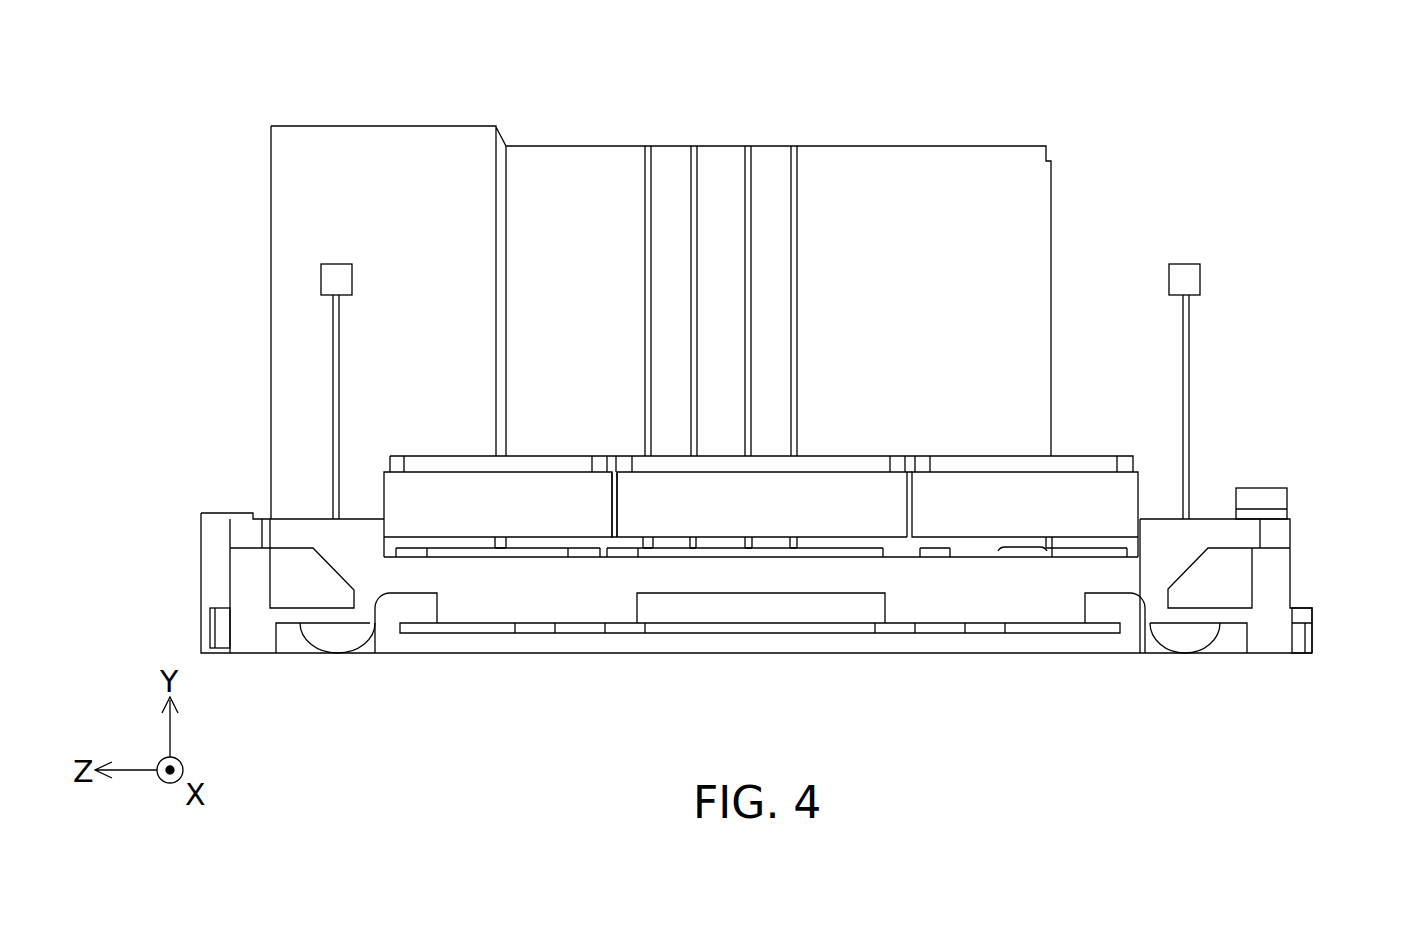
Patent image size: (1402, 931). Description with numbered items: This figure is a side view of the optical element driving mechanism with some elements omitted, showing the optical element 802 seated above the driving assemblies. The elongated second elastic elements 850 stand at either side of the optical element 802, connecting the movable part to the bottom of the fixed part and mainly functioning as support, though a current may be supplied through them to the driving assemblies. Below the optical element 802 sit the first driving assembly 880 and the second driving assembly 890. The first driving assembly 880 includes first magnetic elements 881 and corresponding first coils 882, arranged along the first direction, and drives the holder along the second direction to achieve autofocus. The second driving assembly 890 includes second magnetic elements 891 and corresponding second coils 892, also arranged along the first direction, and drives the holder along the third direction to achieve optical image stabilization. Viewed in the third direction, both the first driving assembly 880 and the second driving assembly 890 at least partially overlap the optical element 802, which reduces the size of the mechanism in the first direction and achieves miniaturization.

The optical element 802 is at (581, 199).
The second elastic element 850 is at (336, 360).
The first driving assembly 880 is at (888, 405).
The first magnetic element 881 is at (467, 522).
The first coil 882 is at (562, 555).
The second driving assembly 890 is at (1000, 453).
The second magnetic element 891 is at (725, 522).
The second coil 892 is at (820, 555).